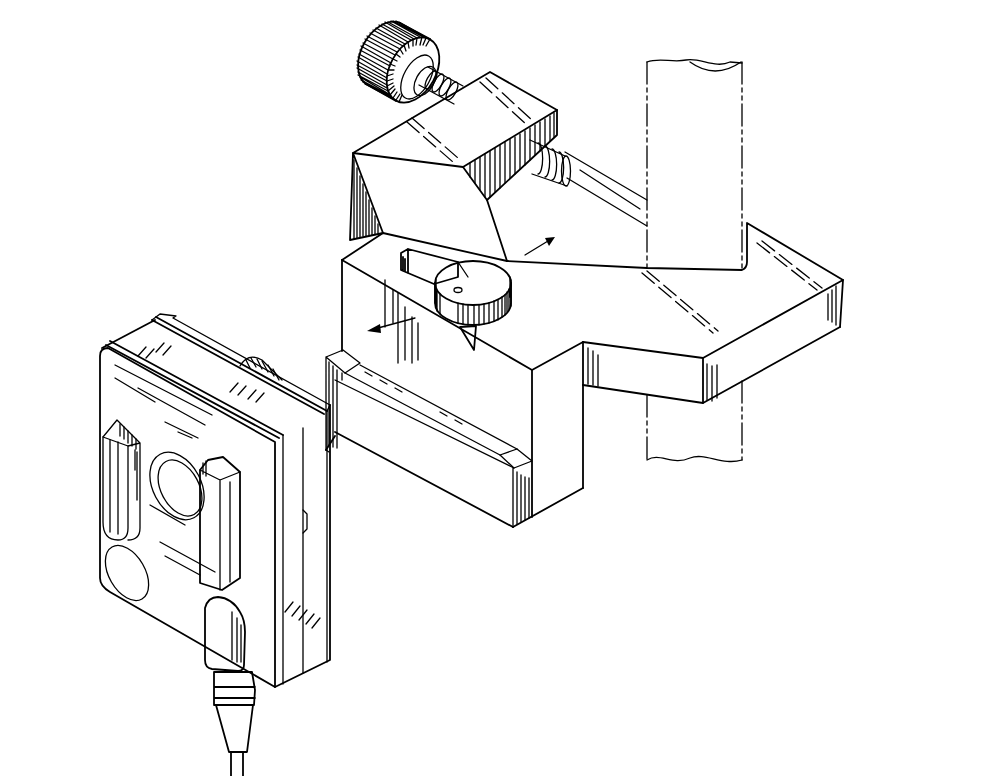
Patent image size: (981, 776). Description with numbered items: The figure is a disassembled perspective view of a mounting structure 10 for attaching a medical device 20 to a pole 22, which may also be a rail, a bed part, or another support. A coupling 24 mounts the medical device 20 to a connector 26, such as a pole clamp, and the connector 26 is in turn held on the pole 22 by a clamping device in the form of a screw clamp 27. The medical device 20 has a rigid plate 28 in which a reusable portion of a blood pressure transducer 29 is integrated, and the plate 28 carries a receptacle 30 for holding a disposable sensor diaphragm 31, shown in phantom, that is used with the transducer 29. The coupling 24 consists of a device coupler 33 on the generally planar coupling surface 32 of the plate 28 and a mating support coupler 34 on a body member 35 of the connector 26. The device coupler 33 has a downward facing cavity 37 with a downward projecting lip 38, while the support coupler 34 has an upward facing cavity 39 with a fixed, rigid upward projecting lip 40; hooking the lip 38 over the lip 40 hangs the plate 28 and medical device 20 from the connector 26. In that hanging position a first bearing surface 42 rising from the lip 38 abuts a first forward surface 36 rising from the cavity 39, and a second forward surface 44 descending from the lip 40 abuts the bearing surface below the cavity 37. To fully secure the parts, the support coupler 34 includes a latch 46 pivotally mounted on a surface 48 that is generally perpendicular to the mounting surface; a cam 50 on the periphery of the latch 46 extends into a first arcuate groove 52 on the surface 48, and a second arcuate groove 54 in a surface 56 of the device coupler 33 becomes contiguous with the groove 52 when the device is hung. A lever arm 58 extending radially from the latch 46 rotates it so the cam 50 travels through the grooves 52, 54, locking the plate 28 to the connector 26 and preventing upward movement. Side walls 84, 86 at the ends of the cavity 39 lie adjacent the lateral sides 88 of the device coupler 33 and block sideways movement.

The mounting structure 10 is at (196, 128).
The medical device 20 is at (86, 349).
The pole 22 is at (742, 110).
The coupling 24 is at (262, 282).
The connector 26 is at (338, 151).
The screw clamp 27 is at (572, 162).
The rigid plate 28 is at (123, 335).
The blood pressure transducer 29 is at (178, 497).
The receptacle 30 is at (122, 471).
The disposable sensor diaphragm 31 is at (100, 495).
The coupling surface 32 is at (333, 630).
The device coupler 33 is at (199, 315).
The support coupler 34 is at (453, 500).
The body member 35 is at (560, 507).
The first forward surface 36 is at (352, 291).
The downward facing cavity 37 is at (332, 497).
The downward projecting lip 38 is at (333, 490).
The upward facing cavity 39 is at (432, 405).
The upward projecting lip 40 is at (425, 422).
The first bearing surface 42 is at (335, 460).
The second forward surface 44 is at (433, 470).
The latch 46 is at (466, 252).
The surface 48 is at (598, 332).
The cam 50 is at (512, 292).
The first arcuate groove 52 is at (453, 334).
The second arcuate groove 54 is at (297, 362).
The surface 56 is at (215, 342).
The lever arm 58 is at (407, 250).
The side wall 84 is at (512, 450).
The side wall 86 is at (355, 387).
The lateral sides 88 is at (336, 435).